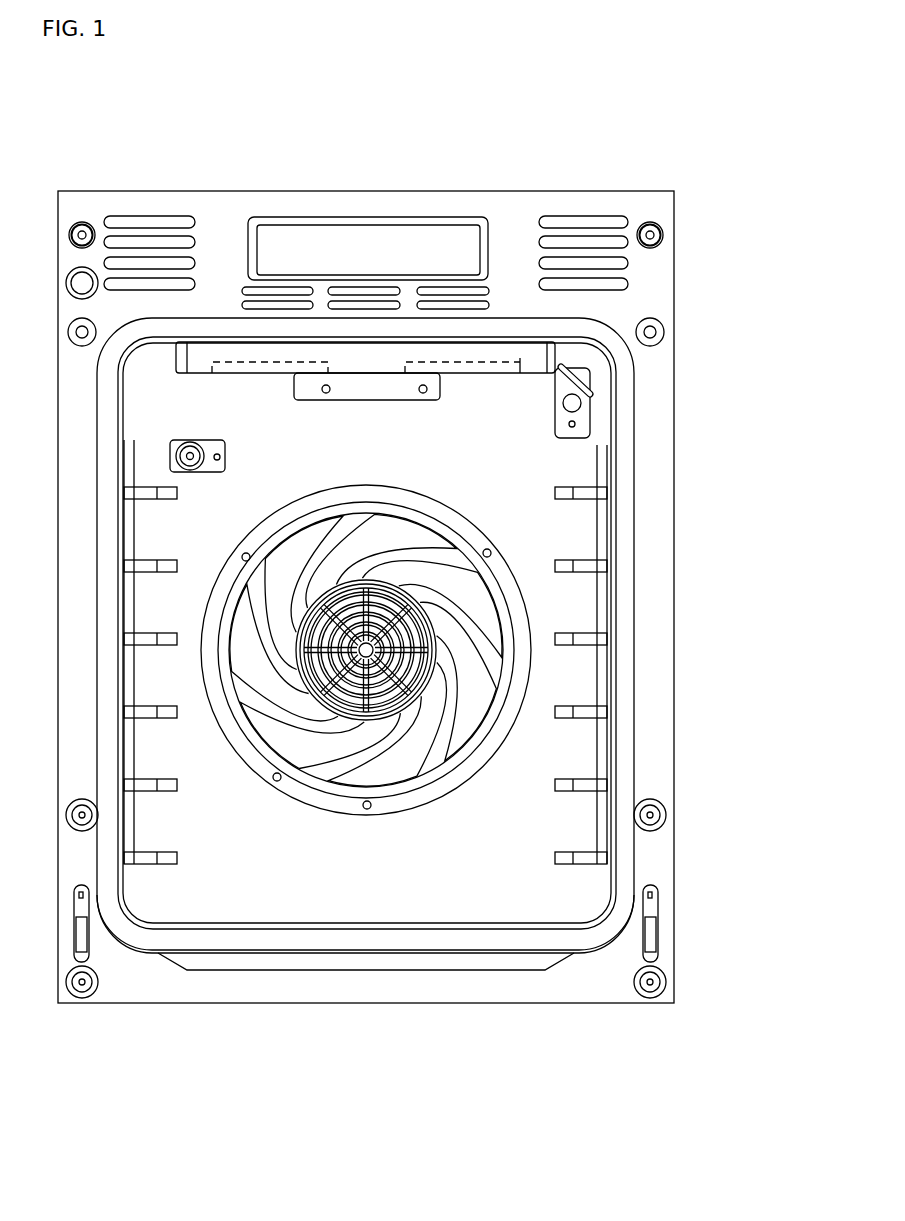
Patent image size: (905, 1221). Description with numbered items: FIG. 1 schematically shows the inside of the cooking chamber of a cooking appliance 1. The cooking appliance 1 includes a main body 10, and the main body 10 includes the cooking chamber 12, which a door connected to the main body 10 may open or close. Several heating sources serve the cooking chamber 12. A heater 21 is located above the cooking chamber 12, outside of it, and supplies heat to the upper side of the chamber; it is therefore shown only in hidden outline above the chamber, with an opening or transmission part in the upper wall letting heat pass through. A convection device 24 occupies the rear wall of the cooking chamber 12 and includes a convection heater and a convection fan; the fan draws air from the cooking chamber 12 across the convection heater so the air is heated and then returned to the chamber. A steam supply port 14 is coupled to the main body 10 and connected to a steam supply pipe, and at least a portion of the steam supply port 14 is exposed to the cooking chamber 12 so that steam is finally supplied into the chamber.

The cooking appliance 1 is at (536, 160).
The main body 10 is at (668, 482).
The cooking chamber 12 is at (430, 907).
The steam supply port 14 is at (201, 442).
The heater 21 is at (520, 362).
The convection device 24 is at (508, 539).